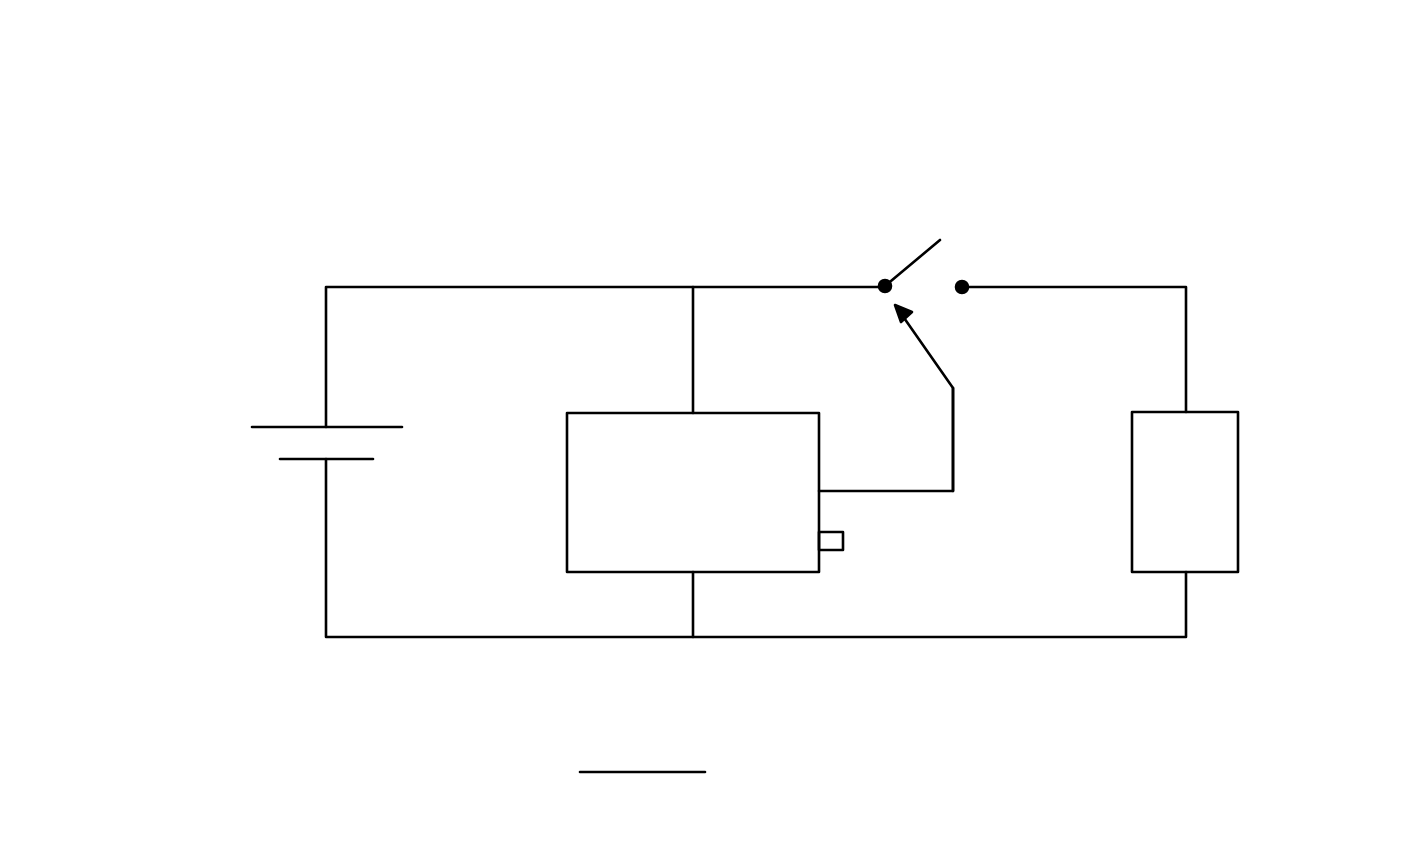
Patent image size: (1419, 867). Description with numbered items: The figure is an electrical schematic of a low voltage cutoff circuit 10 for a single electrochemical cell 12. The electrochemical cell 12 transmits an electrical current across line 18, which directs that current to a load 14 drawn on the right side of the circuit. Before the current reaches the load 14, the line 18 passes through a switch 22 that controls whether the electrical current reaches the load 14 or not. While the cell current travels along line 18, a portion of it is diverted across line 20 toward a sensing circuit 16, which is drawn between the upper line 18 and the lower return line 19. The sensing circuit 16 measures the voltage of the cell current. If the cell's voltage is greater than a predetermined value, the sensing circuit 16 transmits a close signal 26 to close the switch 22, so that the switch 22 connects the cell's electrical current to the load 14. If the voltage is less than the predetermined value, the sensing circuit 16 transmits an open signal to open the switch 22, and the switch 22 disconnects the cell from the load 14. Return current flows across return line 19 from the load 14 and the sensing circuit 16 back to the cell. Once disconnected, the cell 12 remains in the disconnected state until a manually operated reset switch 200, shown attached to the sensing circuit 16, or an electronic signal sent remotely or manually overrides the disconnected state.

The low voltage cutoff circuit 10 is at (1066, 214).
The electrochemical cell 12 is at (266, 388).
The load 14 is at (1240, 480).
The sensing circuit 16 is at (705, 514).
The line 18 is at (472, 287).
The return line 19 is at (1005, 637).
The line 20 is at (693, 362).
The switch 22 is at (910, 262).
The close signal 26 is at (912, 492).
The manually operated reset switch 200 is at (843, 540).